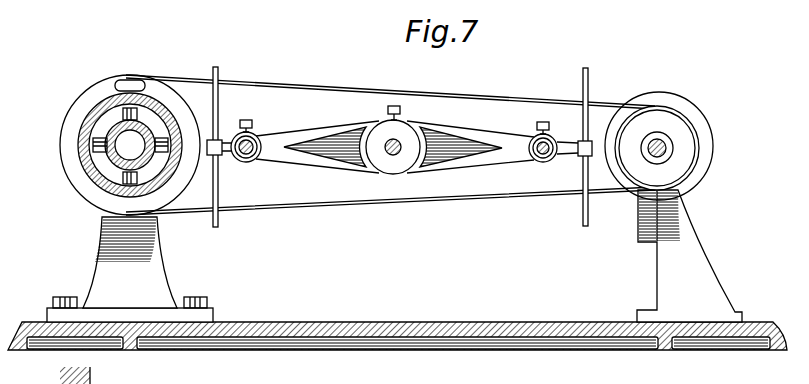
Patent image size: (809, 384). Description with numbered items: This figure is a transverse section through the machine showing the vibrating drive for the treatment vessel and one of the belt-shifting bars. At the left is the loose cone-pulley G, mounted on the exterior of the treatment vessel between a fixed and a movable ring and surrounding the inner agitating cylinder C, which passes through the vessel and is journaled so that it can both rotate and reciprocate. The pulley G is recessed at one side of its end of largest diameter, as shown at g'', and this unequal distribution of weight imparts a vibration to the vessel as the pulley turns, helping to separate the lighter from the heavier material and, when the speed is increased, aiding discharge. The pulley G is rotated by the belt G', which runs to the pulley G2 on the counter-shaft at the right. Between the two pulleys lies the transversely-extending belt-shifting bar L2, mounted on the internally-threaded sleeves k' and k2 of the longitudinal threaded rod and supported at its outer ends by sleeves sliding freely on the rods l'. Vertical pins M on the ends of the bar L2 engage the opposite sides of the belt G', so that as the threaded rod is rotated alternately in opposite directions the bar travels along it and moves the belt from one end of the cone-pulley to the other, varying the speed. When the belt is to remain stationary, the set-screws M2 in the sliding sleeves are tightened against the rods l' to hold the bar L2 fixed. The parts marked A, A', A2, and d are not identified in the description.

The base A is at (397, 316).
The pedestal standard A' is at (394, 256).
The annular ring of wheel A2 is at (78, 146).
The loose cone-pulley G is at (122, 140).
The recess g'' is at (122, 66).
The inner agitating cylinder C is at (130, 145).
The keys/blocks d is at (136, 178).
The belt G' is at (390, 129).
The vertical pins M is at (220, 223).
The set-screws M2 is at (251, 122).
The belt-shifting bar L2 is at (318, 132).
The internally-threaded sleeve k' is at (394, 160).
The internally-threaded sleeve k2 is at (421, 148).
The rods l' is at (394, 164).
The pulley G2 is at (710, 132).